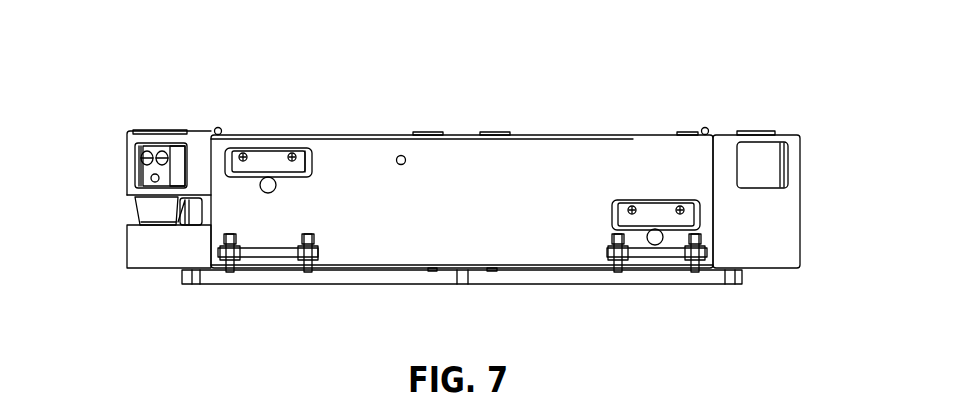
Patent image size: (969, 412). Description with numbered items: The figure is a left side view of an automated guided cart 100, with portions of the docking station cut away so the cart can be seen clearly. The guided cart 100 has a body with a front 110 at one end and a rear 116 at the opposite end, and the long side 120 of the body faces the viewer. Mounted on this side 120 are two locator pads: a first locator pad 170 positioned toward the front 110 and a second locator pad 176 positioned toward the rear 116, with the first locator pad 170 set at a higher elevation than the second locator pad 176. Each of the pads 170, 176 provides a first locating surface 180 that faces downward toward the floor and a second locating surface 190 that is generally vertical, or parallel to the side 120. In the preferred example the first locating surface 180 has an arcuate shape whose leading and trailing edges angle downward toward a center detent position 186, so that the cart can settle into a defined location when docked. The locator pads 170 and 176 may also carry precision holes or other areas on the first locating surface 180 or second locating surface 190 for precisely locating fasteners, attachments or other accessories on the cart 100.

The automated guided cart 100 is at (493, 146).
The front 110 is at (105, 203).
The rear 116 is at (814, 190).
The side 120 is at (544, 205).
The first locator pad 170 is at (264, 145).
The second locator pad 176 is at (677, 220).
The first locating surface 180 is at (295, 176).
The center detent position 186 is at (270, 177).
The second locating surface 190 is at (253, 162).